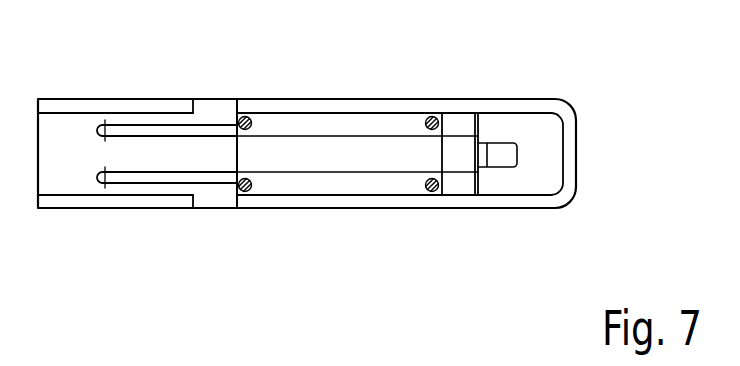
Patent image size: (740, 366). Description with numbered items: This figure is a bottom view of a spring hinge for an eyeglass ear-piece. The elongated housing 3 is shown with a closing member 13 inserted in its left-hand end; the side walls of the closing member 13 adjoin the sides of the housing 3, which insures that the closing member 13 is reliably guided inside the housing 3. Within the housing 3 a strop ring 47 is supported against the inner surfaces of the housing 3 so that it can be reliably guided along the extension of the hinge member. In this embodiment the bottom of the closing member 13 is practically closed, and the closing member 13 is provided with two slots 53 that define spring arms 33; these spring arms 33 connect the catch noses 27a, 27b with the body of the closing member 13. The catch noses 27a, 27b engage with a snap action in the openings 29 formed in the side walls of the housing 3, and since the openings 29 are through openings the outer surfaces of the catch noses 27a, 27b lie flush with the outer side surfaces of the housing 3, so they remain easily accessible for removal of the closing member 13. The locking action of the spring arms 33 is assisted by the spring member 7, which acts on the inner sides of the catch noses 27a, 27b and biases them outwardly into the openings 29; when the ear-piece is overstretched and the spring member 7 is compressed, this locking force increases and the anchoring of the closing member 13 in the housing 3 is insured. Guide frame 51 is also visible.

The housing 3 is at (577, 130).
The spring member 7 is at (437, 192).
The closing member 13 is at (57, 167).
The catch nose 27a is at (210, 110).
The catch nose 27b is at (222, 197).
The openings 29 is at (242, 106).
The spring arms 33 is at (148, 117).
The strop ring 47 is at (462, 125).
The guide frame 51 is at (382, 107).
The slots 53 is at (130, 178).